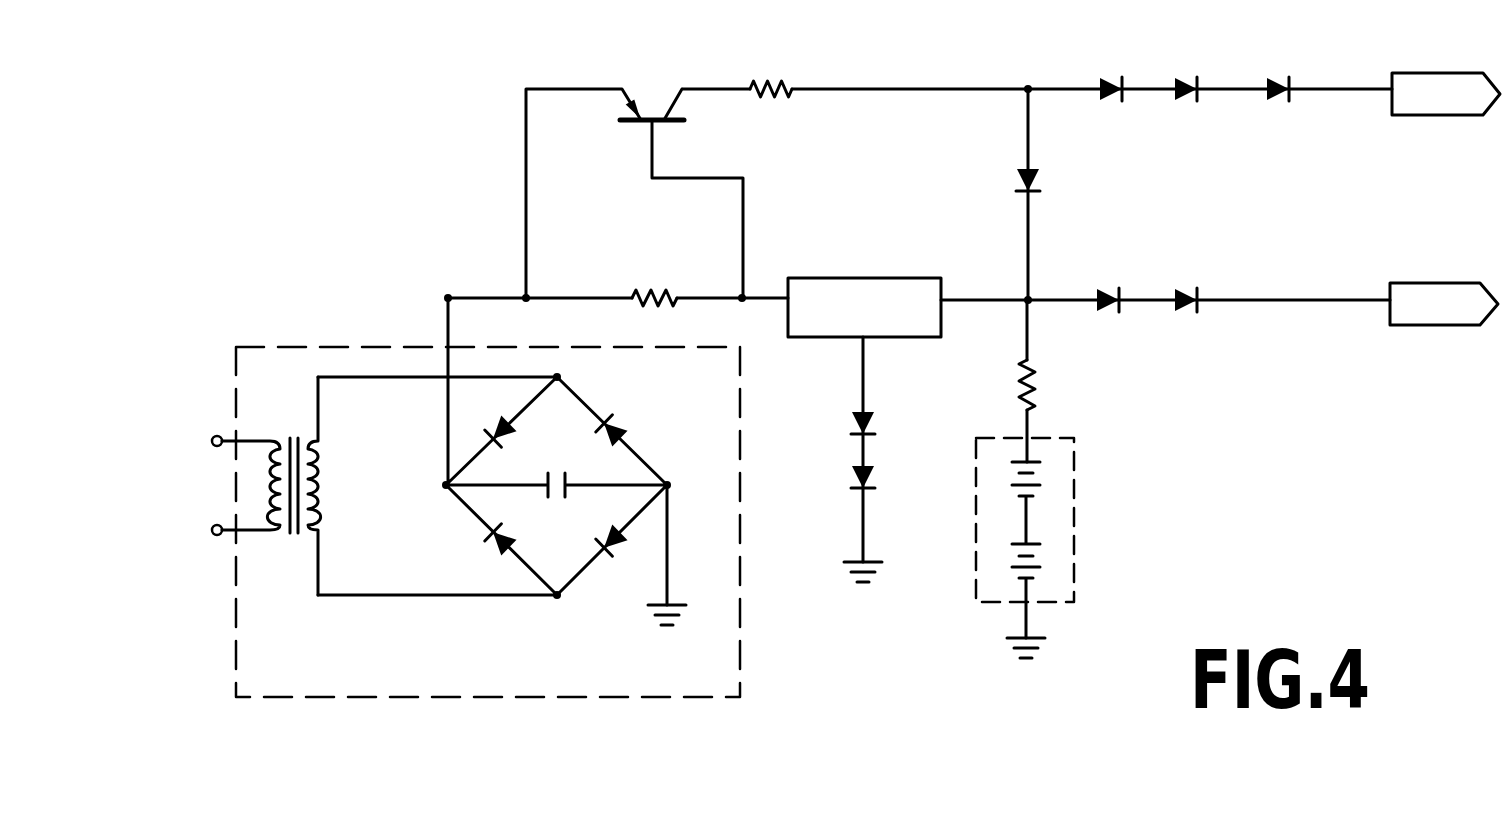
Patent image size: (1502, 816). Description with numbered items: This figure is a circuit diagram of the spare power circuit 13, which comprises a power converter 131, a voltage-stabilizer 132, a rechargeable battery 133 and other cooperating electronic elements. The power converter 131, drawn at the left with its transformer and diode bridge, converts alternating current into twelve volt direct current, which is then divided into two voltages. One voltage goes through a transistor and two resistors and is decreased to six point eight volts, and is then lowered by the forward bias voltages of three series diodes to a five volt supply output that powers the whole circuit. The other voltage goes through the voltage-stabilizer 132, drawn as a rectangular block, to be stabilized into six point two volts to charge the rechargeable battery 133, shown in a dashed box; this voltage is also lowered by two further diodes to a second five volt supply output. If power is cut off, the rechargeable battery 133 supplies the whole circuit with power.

The spare power circuit 13 is at (418, 125).
The power converter 131 is at (377, 352).
The voltage-stabilizer 132 is at (874, 282).
The rechargeable battery 133 is at (1068, 503).